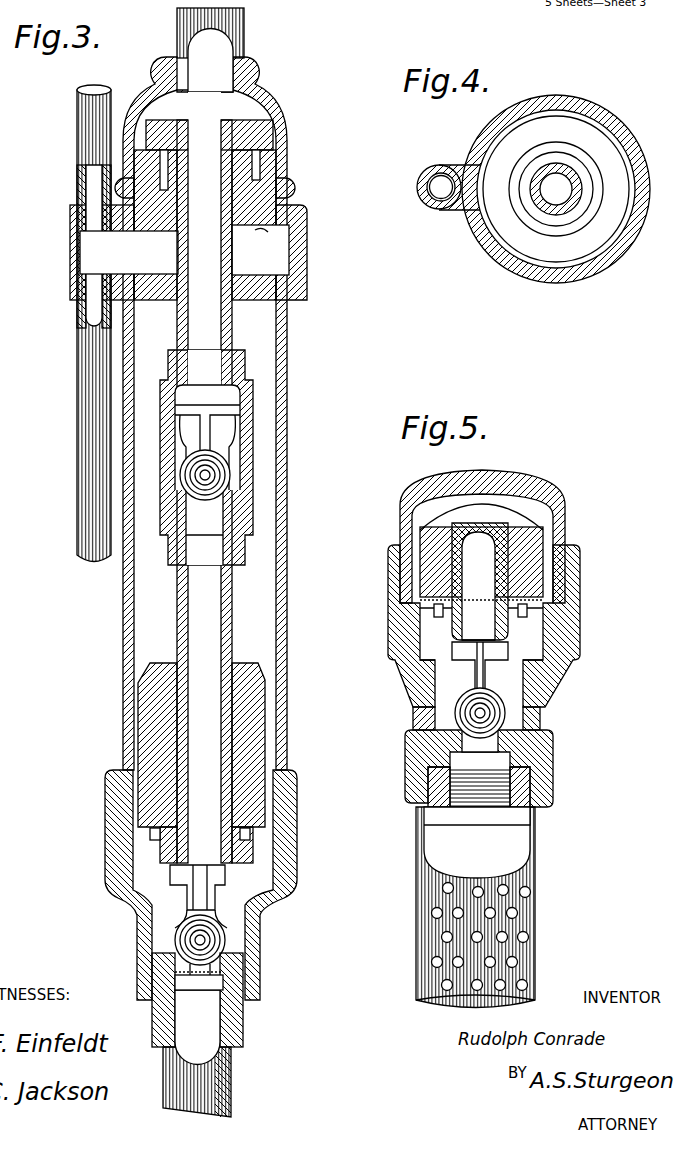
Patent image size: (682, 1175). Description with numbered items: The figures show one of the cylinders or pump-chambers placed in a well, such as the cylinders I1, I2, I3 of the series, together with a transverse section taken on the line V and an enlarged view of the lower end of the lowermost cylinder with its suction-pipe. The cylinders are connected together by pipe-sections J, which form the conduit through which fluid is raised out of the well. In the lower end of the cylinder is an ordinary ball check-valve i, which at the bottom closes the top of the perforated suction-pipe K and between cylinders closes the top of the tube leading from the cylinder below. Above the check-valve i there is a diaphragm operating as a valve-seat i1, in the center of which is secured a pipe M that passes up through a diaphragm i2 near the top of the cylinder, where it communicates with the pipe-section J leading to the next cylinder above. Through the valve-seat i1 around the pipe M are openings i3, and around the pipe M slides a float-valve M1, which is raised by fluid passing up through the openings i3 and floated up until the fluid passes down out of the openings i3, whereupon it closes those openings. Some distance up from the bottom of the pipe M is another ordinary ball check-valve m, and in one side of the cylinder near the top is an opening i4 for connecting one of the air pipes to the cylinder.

In FIG. 3, the pipe-section J is at (251, 41).
In FIG. 5, the cylinder I1 is at (572, 523).
In FIG. 3, the cylinder I2 is at (294, 503).
In FIG. 4, the cylinder I2 is at (622, 183).
In FIG. 3, the cylinder I3 is at (77, 143).
In FIG. 4, the cylinder I3 is at (417, 188).
In FIG. 3, the section line V is at (332, 253).
In FIG. 3, the ball check-valve i is at (178, 937).
In FIG. 5, the ball check-valve i is at (453, 710).
In FIG. 3, the diaphragm or valve-seat i1 is at (107, 812).
In FIG. 5, the diaphragm or valve-seat i1 is at (395, 605).
In FIG. 3, the diaphragm i2 is at (290, 230).
In FIG. 3, the openings i3 is at (246, 845).
In FIG. 5, the openings i3 is at (527, 627).
In FIG. 3, the opening i4 is at (77, 262).
In FIG. 4, the opening i4 is at (430, 205).
In FIG. 3, the pipe M is at (177, 319).
In FIG. 4, the pipe M is at (568, 189).
In FIG. 5, the pipe M is at (440, 562).
In FIG. 3, the float-valve M1 is at (140, 714).
In FIG. 5, the float-valve M1 is at (425, 540).
In FIG. 3, the ball check-valve m is at (177, 482).
In FIG. 5, the perforated suction-pipe K is at (410, 883).